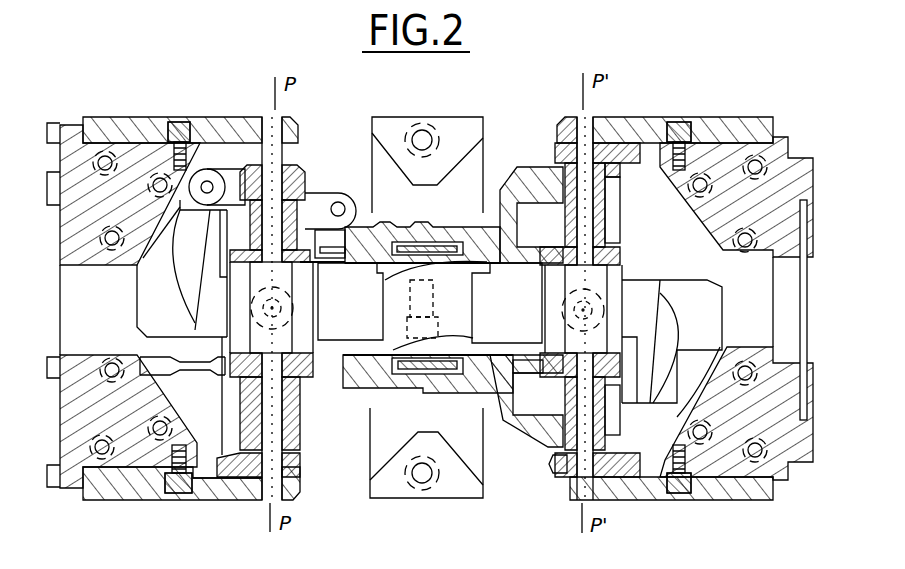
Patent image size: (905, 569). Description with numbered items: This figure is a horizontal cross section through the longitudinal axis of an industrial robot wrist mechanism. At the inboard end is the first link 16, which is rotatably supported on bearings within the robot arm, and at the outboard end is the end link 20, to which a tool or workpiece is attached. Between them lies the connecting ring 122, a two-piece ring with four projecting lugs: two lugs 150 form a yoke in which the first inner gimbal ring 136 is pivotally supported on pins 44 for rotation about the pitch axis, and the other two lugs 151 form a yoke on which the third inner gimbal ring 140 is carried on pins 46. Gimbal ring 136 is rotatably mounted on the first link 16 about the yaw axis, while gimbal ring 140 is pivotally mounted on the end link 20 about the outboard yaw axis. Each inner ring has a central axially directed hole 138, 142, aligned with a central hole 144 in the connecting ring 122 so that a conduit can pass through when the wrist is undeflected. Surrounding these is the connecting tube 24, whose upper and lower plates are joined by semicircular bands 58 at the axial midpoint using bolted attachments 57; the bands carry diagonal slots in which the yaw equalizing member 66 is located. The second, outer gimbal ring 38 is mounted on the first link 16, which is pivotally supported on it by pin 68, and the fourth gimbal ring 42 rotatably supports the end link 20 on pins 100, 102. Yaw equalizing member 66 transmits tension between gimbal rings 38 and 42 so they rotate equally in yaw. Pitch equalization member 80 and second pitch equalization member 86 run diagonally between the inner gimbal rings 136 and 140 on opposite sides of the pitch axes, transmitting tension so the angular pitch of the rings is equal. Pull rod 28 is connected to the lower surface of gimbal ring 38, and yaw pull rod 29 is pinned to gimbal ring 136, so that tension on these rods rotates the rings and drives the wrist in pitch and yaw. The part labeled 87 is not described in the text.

The first link 16 is at (145, 122).
The end link 20 is at (733, 123).
The connecting tube 24 is at (480, 150).
The pull rod 28 is at (150, 362).
The yaw pull rod 29 is at (55, 165).
The second gimbal ring 38 is at (290, 165).
The fourth gimbal ring 42 is at (648, 123).
The pins 44 is at (312, 178).
The pins 46 is at (613, 217).
The bolted attachments 57 is at (298, 478).
The semicircular bands 58 is at (381, 156).
The yaw equalizing member 66 is at (263, 500).
The pin 68 is at (267, 120).
The pitch equalization member 80 is at (440, 368).
The second pitch equalization member 86 is at (433, 253).
The bracket 87 is at (355, 207).
The pin 100 is at (583, 125).
The pin 102 is at (583, 485).
The connecting ring 122 is at (537, 157).
The first inner gimbal ring 136 is at (312, 350).
The central axially directed hole 138 is at (312, 282).
The third inner gimbal ring 140 is at (620, 247).
The central axially directed hole 142 is at (623, 262).
The central axially directed hole 144 is at (492, 263).
The projecting lugs 150 is at (305, 160).
The projecting lugs 151 is at (545, 165).